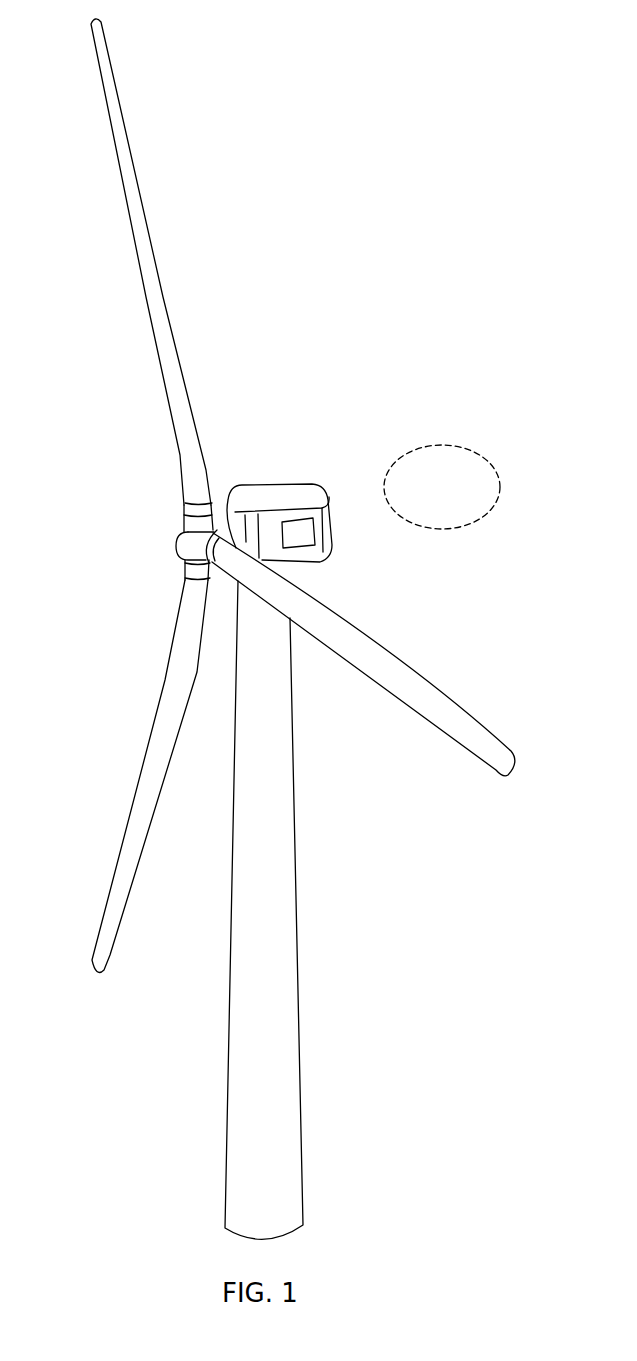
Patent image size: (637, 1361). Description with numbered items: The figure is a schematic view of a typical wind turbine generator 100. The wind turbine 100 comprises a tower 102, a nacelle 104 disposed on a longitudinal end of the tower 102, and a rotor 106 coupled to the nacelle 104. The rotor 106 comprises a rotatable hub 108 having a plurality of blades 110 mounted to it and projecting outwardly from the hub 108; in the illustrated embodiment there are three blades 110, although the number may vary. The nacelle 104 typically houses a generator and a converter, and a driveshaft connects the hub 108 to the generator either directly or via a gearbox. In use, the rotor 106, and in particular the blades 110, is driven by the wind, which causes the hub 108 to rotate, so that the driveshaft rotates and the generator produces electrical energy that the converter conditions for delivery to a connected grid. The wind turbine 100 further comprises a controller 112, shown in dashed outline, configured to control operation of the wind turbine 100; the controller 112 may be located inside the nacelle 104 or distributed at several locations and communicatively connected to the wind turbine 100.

The wind turbine generator 100 is at (390, 305).
The tower 102 is at (290, 935).
The nacelle 104 is at (279, 493).
The rotor 106 is at (143, 255).
The rotatable hub 108 is at (182, 552).
The blades 110 is at (95, 963).
The controller 112 is at (296, 536).